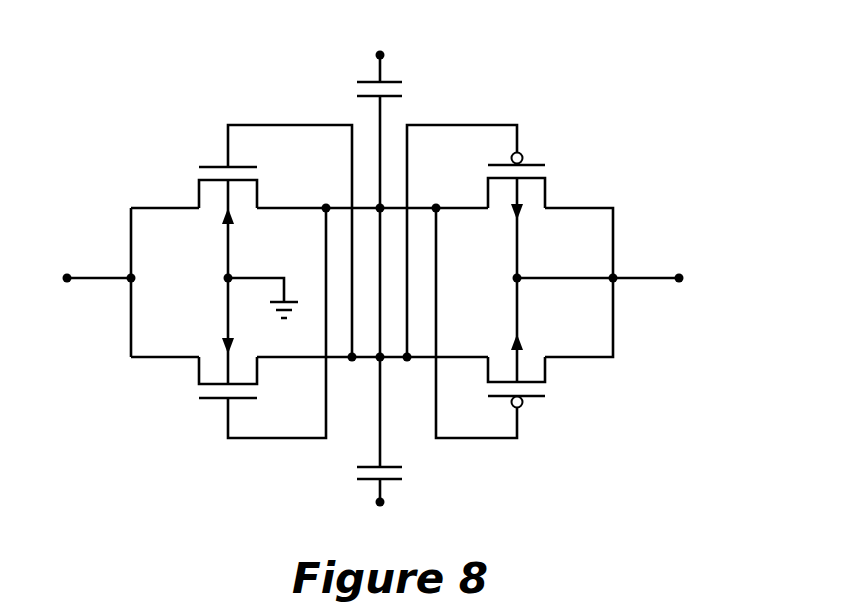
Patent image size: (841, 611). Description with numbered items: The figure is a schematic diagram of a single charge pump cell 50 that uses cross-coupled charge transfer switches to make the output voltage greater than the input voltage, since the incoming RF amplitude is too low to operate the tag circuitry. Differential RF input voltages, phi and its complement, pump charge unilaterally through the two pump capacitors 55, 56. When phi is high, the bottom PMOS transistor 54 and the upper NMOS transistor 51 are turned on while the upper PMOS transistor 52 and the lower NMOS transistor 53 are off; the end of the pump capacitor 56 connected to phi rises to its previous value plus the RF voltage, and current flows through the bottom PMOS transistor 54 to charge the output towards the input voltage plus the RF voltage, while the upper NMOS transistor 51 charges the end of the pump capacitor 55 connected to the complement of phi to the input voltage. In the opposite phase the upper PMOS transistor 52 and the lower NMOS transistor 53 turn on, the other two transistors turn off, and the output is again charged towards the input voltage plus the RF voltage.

The charge pump cell 50 is at (125, 150).
The upper NMOS transistor 51 is at (212, 166).
The upper PMOS transistor 52 is at (535, 163).
The lower NMOS transistor 53 is at (216, 400).
The bottom PMOS transistor 54 is at (535, 397).
The pump capacitor 55 is at (365, 82).
The pump capacitor 56 is at (372, 480).